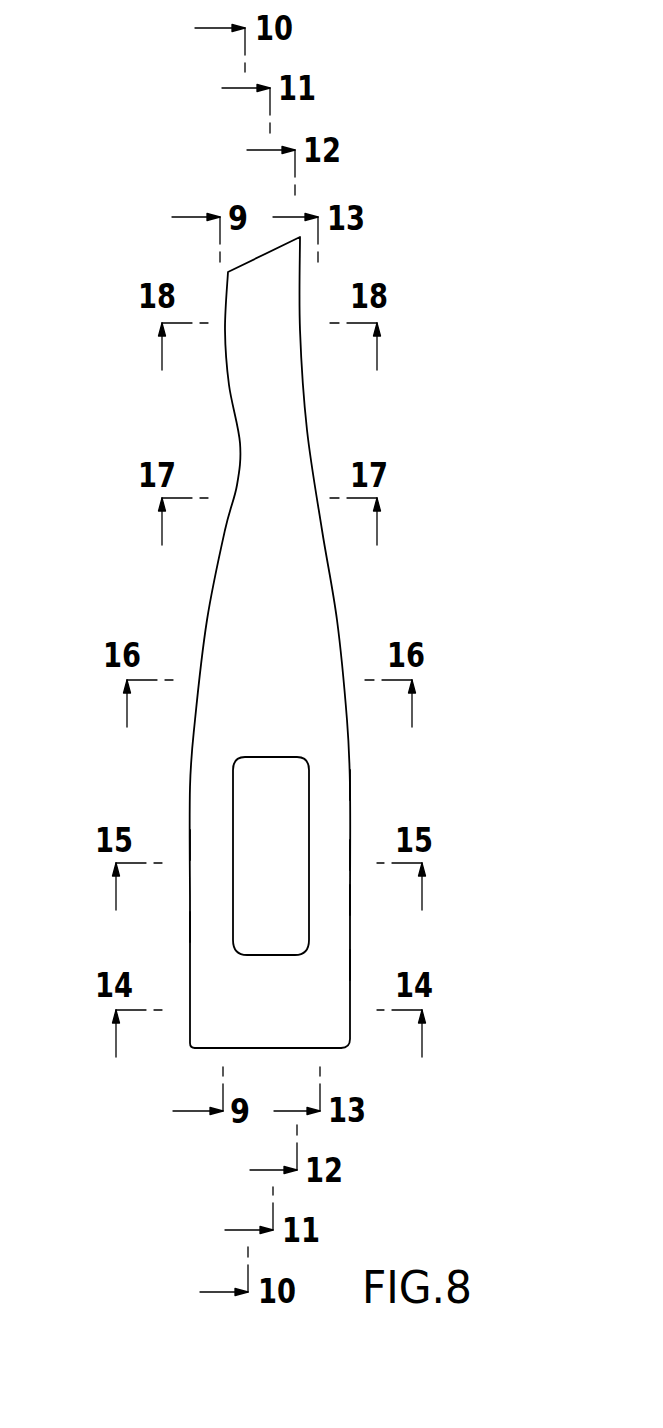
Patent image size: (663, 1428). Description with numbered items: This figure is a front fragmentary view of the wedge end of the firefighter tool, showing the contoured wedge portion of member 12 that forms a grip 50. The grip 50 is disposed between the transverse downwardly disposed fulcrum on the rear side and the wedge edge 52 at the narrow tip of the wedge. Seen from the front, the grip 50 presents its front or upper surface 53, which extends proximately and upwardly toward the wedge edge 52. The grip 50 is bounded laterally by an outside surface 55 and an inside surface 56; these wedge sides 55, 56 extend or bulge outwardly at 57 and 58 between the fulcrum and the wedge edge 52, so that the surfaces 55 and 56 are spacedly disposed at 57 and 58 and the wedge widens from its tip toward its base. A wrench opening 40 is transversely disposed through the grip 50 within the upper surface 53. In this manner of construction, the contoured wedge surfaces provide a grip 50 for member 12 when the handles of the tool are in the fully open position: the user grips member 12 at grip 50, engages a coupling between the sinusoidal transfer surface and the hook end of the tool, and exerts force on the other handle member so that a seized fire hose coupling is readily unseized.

The member 12 is at (308, 443).
The wrench opening 40 is at (253, 937).
The grip 50 is at (350, 787).
The wedge edge 52 is at (335, 1048).
The upper surface 53 is at (341, 897).
The outside surface 55 is at (188, 843).
The inside surface 56 is at (350, 853).
The outward bulge of outside surface 57 is at (188, 927).
The outward bulge of inside surface 58 is at (350, 963).